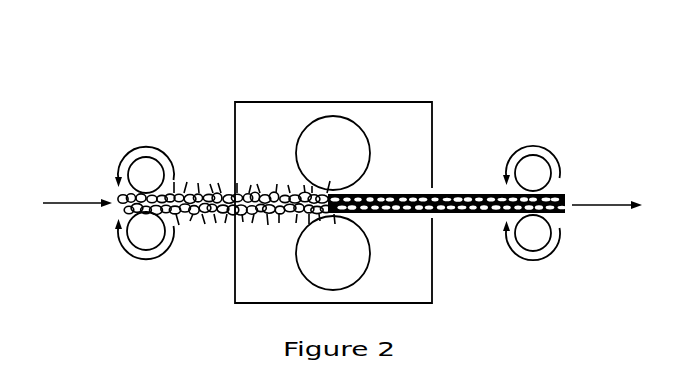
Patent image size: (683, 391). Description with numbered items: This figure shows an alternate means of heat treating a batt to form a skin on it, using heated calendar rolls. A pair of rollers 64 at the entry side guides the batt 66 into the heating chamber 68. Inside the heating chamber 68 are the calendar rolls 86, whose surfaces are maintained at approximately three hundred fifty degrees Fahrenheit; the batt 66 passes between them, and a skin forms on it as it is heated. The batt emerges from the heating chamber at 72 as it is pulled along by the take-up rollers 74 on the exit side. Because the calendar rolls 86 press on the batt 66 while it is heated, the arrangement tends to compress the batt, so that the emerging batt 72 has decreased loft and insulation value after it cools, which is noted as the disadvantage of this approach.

The rollers 64 is at (143, 167).
The batt 66 is at (207, 193).
The heating chamber 68 is at (267, 100).
The calendar rolls 86 is at (352, 128).
The batt 72 is at (473, 193).
The take-up rollers 74 is at (541, 158).